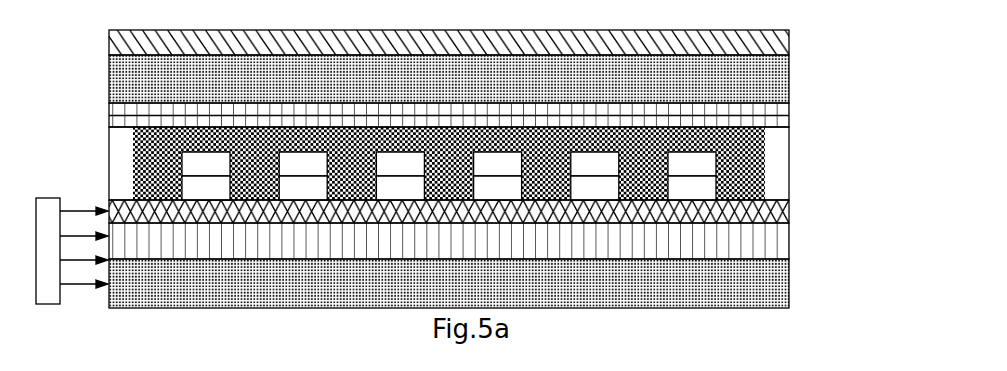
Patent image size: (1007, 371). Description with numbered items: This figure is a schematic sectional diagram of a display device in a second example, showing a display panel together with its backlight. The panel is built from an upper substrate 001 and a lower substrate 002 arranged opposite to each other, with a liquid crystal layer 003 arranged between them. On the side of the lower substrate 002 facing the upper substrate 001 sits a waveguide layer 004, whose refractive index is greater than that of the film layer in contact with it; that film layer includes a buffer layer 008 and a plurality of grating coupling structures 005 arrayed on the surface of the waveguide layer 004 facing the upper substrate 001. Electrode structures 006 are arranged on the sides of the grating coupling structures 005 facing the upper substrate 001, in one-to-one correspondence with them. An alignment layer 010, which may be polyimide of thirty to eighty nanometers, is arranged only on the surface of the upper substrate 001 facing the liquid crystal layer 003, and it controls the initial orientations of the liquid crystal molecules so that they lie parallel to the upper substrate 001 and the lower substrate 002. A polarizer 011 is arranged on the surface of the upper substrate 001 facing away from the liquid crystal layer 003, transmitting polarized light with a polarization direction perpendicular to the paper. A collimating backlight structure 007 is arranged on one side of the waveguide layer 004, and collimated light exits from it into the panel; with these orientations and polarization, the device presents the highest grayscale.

The polarizer 011 is at (778, 45).
The upper substrate 001 is at (778, 81).
The alignment layer 010 is at (770, 118).
The liquid crystal layer 003 is at (765, 139).
The electrode structures 006 is at (765, 164).
The grating coupling structures 005 is at (765, 186).
The waveguide layer 004 is at (789, 214).
The buffer layer 008 is at (773, 246).
The lower substrate 002 is at (778, 285).
The collimating backlight structure 007 is at (55, 210).